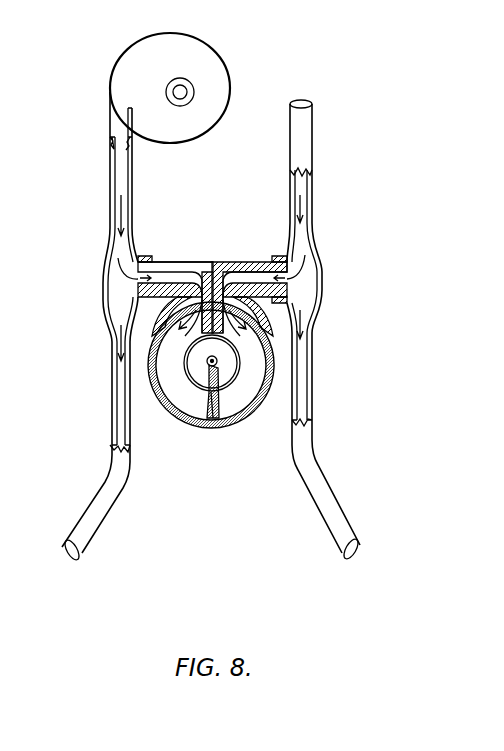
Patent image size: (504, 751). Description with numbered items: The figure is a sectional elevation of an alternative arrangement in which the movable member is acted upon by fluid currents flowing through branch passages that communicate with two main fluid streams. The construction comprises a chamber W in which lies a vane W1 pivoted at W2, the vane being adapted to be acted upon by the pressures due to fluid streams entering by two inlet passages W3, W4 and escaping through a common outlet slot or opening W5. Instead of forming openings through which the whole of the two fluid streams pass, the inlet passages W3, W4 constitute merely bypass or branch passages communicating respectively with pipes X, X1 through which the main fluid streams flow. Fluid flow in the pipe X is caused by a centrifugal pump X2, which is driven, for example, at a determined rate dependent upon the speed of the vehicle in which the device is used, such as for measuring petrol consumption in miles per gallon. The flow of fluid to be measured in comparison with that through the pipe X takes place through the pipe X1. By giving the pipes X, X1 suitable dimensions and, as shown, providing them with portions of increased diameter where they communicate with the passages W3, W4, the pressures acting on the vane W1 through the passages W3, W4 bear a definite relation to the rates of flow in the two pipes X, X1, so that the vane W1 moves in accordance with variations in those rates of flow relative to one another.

The pipe X is at (110, 173).
The pipe X1 is at (312, 192).
The centrifugal pump X2 is at (193, 66).
The chamber W is at (257, 408).
The vane W1 is at (210, 404).
The pivot W2 is at (209, 366).
The inlet passage W3 is at (168, 278).
The inlet passage W4 is at (250, 278).
The common outlet slot W5 is at (228, 393).